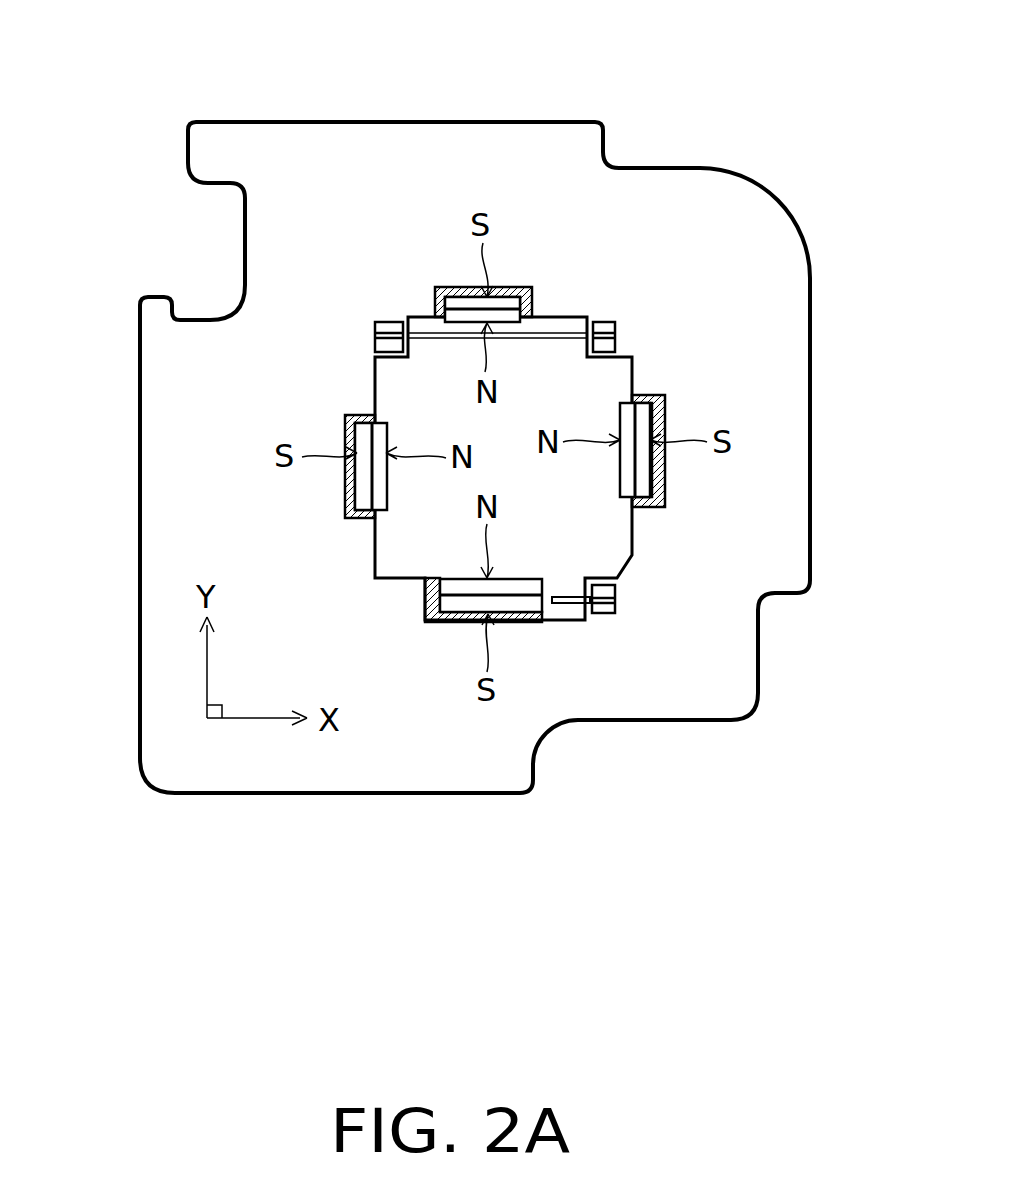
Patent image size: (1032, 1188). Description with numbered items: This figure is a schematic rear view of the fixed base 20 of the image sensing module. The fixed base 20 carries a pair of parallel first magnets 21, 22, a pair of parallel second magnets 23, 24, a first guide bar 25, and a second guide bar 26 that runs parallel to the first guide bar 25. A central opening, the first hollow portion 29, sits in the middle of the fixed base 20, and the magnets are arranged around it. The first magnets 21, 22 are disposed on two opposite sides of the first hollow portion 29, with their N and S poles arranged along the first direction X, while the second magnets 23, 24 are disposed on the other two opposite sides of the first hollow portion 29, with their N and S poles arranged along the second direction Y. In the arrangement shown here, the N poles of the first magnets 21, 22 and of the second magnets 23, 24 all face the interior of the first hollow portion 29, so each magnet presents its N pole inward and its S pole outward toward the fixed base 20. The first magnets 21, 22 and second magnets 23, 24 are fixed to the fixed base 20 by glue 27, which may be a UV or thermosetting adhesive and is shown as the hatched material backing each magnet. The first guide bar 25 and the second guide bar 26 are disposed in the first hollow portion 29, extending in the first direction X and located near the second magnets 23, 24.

The fixed base 20 is at (803, 352).
The first magnet 21 is at (647, 485).
The first magnet 22 is at (365, 487).
The second magnet 23 is at (527, 607).
The second magnet 24 is at (515, 305).
The first guide bar 25 is at (568, 603).
The second guide bar 26 is at (424, 336).
The glue 27 is at (452, 290).
The first hollow portion 29 is at (600, 542).